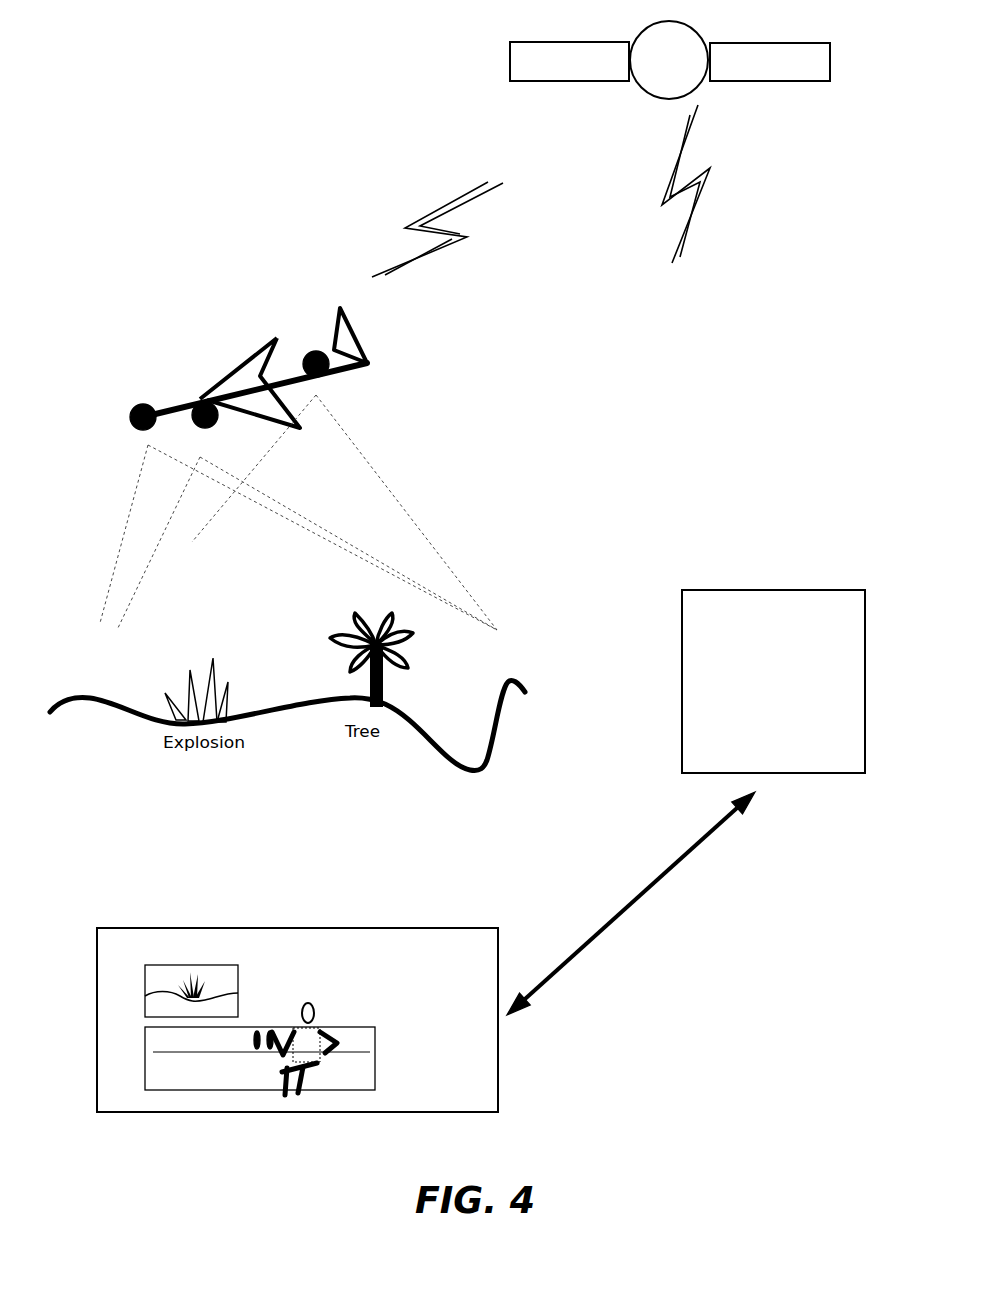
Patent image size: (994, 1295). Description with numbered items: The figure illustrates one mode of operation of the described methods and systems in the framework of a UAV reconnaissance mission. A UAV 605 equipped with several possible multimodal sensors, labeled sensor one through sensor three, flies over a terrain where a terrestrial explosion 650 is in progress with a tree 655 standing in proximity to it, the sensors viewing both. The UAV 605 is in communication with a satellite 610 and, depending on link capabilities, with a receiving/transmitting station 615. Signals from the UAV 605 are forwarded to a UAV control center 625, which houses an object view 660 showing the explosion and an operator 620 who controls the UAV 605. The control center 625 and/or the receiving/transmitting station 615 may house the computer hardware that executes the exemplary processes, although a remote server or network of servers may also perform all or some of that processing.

The UAV 605 is at (249, 338).
The satellite 610 is at (510, 58).
The receiving/transmitting station 615 is at (773, 590).
The operator 620 is at (283, 1070).
The UAV control center 625 is at (297, 982).
The terrestrial explosion 650 is at (213, 663).
The tree 655 is at (333, 636).
The object view 660 is at (240, 984).